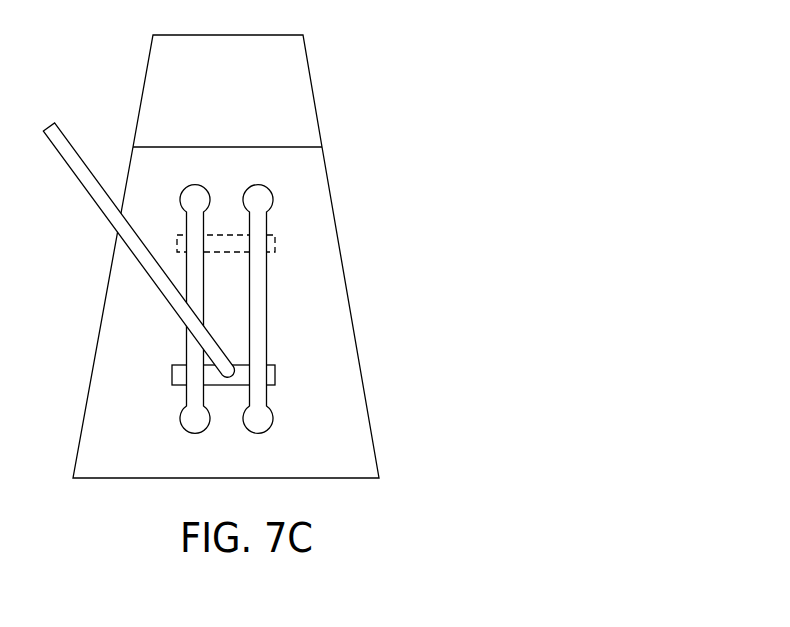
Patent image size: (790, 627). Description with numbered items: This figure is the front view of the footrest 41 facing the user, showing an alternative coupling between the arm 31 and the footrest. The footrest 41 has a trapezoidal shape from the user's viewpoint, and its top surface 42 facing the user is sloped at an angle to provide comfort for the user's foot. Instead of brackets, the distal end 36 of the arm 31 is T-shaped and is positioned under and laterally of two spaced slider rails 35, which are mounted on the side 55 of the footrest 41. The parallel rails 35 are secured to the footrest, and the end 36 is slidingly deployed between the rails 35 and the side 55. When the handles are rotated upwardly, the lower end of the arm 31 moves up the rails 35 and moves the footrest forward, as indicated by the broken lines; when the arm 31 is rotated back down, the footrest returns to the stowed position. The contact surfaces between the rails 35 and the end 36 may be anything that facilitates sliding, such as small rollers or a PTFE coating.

The arm 31 is at (87, 182).
The slider rails 35 is at (192, 230).
The distal end of arm 36 is at (268, 378).
The footrest 41 is at (262, 256).
The top surface 42 is at (305, 85).
The side of footrest 55 is at (345, 277).